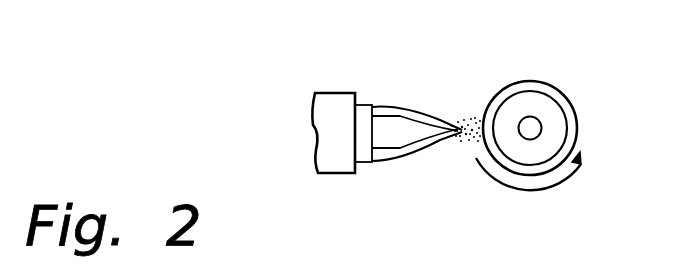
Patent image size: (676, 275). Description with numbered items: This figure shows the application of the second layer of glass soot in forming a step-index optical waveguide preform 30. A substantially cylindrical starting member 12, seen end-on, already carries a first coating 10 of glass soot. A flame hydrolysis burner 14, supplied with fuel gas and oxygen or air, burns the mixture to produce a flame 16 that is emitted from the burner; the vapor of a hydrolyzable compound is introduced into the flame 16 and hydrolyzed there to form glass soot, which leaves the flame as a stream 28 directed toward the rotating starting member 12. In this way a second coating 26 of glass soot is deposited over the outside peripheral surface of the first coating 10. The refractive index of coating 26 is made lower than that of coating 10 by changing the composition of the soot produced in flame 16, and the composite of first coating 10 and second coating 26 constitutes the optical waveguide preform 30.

The coating 10 is at (556, 130).
The starting member 12 is at (531, 123).
The flame hydrolysis burner 14 is at (333, 100).
The flame 16 is at (398, 110).
The second coating 26 is at (562, 100).
The spray 28 is at (470, 120).
The optical waveguide preform 30 is at (528, 80).